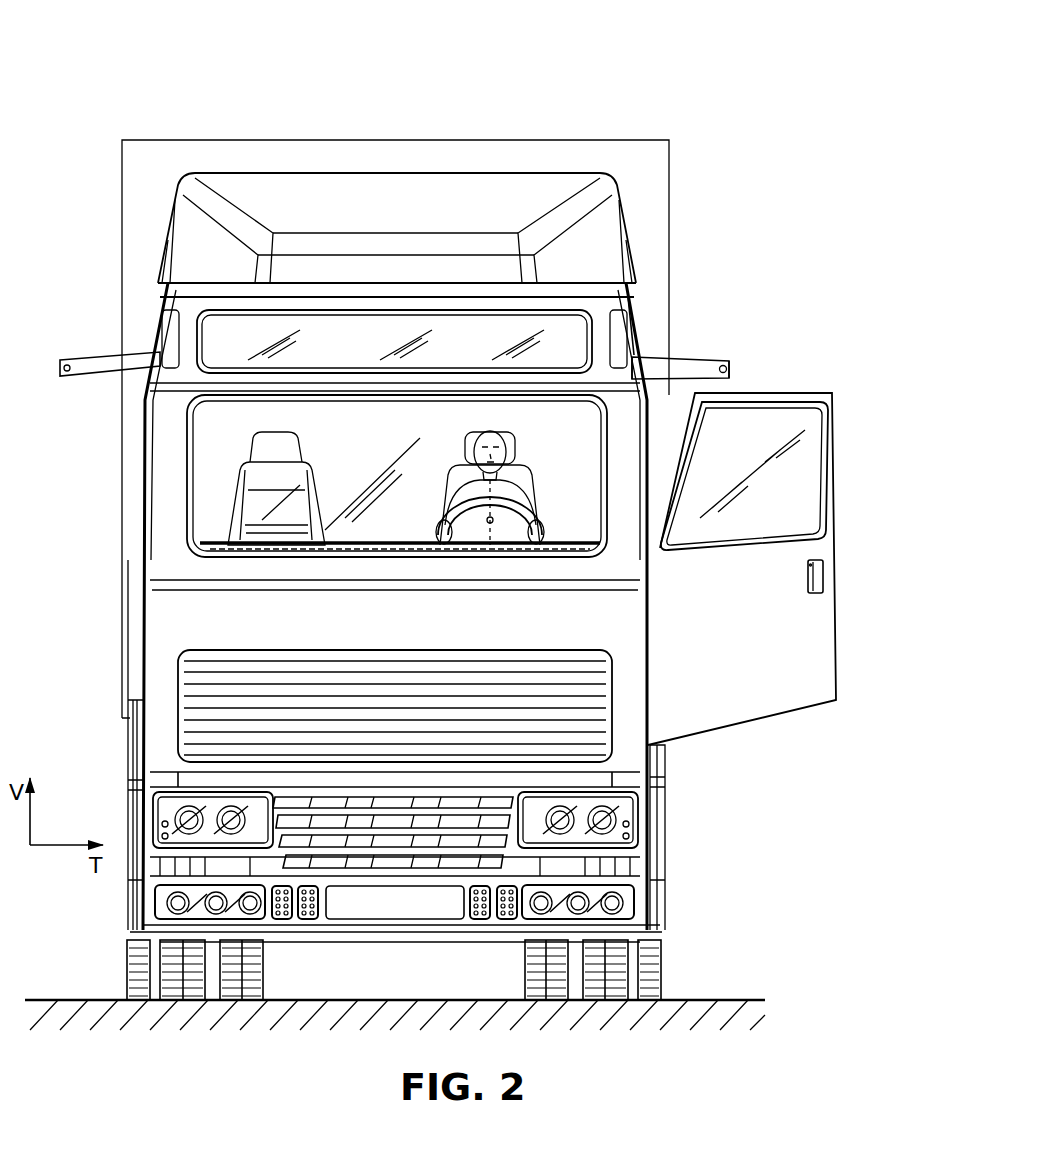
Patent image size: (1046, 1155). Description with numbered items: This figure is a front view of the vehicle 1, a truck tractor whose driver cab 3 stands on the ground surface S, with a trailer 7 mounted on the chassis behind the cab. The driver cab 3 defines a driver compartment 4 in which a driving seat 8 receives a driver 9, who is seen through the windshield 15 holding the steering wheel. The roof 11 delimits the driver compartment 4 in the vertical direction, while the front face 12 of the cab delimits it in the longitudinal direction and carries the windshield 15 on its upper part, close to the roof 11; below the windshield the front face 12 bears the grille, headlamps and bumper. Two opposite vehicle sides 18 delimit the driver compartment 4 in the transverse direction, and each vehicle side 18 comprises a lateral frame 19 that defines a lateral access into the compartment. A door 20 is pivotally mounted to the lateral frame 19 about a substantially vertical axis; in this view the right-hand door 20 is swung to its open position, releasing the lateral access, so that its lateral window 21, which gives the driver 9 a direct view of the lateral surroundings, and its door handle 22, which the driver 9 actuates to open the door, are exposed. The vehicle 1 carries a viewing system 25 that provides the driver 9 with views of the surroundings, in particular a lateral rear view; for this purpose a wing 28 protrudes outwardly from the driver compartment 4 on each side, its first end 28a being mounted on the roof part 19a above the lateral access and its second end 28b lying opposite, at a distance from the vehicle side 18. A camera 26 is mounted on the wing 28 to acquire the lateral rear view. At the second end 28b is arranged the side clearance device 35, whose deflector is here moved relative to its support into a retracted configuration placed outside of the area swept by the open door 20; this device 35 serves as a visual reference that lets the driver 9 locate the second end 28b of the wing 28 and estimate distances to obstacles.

The vehicle 1 is at (76, 80).
The driver cab 3 is at (88, 535).
The driver compartment 4 is at (347, 489).
The trailer 7 is at (672, 168).
The driving seat 8 is at (501, 420).
The driver 9 is at (456, 420).
The roof 11 is at (290, 280).
The front face 12 is at (241, 621).
The windshield 15 is at (212, 521).
The vehicle side 18 is at (126, 625).
The lateral frame 19 is at (775, 568).
The roof part 19a is at (637, 356).
The door 20 is at (779, 686).
The lateral window 21 is at (800, 470).
The door handle 22 is at (826, 572).
The viewing system 25 is at (754, 350).
The camera 26 is at (727, 366).
The wing 28 is at (690, 368).
The first end 28a is at (646, 370).
The second end 28b is at (735, 369).
The side clearance device 35 is at (754, 388).
The ground surface S is at (68, 996).